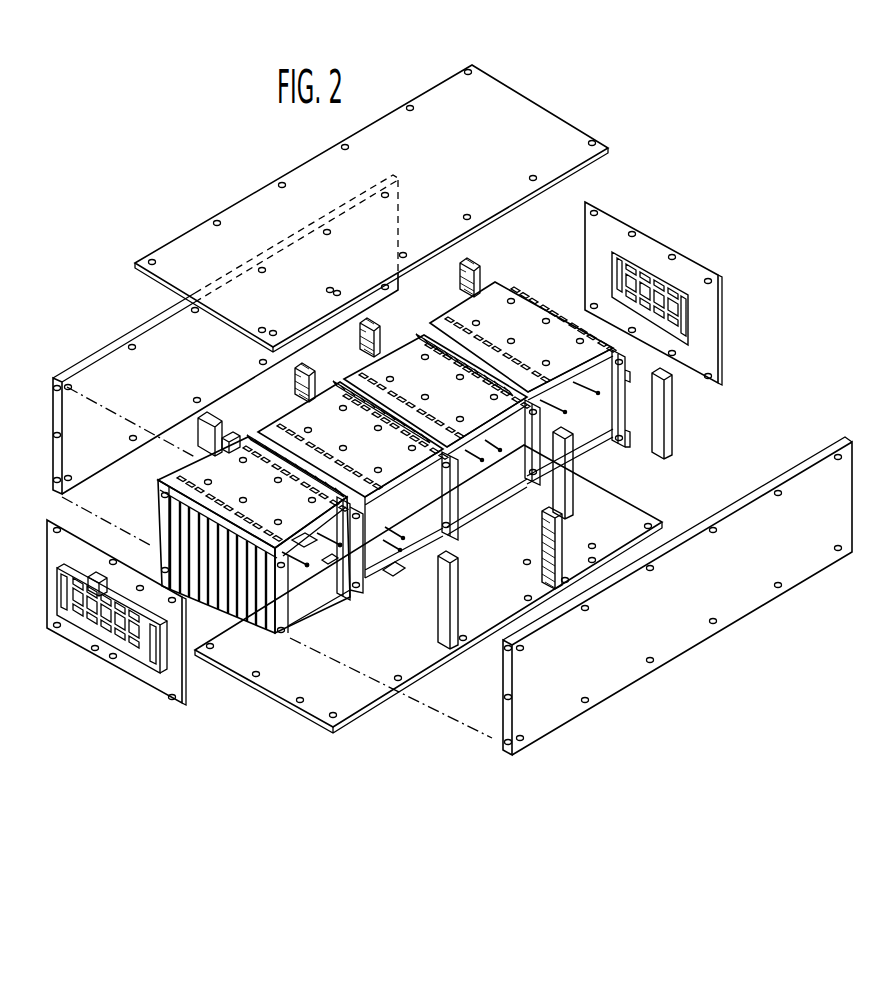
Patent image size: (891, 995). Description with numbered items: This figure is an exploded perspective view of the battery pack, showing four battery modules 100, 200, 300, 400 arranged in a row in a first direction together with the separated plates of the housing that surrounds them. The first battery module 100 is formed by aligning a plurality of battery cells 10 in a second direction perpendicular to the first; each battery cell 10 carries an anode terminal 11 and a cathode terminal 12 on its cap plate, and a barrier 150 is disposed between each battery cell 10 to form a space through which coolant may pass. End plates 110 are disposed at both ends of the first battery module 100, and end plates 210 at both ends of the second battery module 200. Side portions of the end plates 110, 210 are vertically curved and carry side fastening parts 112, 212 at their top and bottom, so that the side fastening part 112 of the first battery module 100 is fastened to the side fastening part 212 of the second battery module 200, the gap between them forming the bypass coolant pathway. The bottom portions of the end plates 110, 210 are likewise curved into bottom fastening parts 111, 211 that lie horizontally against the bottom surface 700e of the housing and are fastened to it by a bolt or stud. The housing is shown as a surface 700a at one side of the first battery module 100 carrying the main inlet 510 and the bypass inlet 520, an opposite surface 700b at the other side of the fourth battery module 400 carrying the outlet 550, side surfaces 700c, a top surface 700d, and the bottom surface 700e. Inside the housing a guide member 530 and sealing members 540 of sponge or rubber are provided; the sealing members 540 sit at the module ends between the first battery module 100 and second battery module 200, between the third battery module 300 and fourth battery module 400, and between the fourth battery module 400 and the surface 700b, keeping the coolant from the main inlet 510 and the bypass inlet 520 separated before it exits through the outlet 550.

The battery cell 10 is at (268, 612).
The anode terminal 11 is at (232, 440).
The cathode terminal 12 is at (351, 600).
The first battery module 100 is at (253, 480).
The end plate 110 is at (300, 600).
The bottom fastening part 111 is at (355, 608).
The side fastening part 112 is at (366, 588).
The barrier 150 is at (250, 605).
The second battery module 200 is at (353, 470).
The end plate 210 is at (397, 548).
The bottom fastening part 211 is at (397, 576).
The side fastening part 212 is at (400, 528).
The third battery module 300 is at (442, 426).
The fourth battery module 400 is at (530, 371).
The main inlet 510 is at (108, 640).
The bypass inlet 520 is at (153, 677).
The guide member 530 is at (563, 536).
The sealing member 540 is at (456, 578).
The outlet 550 is at (672, 290).
The housing surface 700a is at (163, 700).
The opposite housing surface 700b is at (722, 388).
The housing side surface 700c is at (105, 360).
The housing top surface 700d is at (545, 118).
The housing bottom surface 700e is at (300, 693).